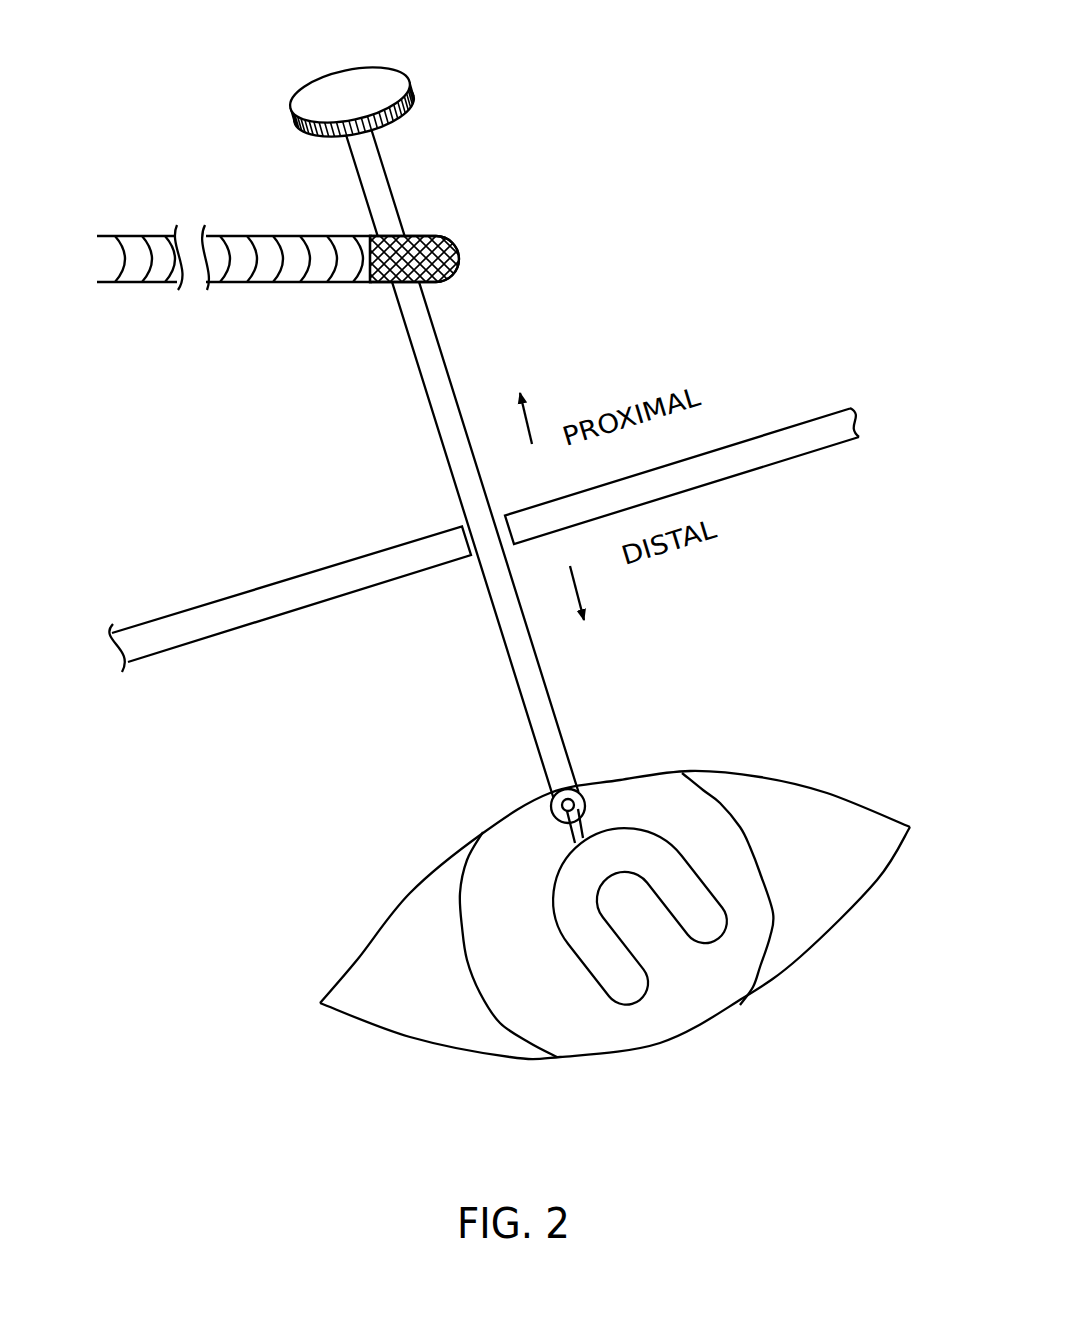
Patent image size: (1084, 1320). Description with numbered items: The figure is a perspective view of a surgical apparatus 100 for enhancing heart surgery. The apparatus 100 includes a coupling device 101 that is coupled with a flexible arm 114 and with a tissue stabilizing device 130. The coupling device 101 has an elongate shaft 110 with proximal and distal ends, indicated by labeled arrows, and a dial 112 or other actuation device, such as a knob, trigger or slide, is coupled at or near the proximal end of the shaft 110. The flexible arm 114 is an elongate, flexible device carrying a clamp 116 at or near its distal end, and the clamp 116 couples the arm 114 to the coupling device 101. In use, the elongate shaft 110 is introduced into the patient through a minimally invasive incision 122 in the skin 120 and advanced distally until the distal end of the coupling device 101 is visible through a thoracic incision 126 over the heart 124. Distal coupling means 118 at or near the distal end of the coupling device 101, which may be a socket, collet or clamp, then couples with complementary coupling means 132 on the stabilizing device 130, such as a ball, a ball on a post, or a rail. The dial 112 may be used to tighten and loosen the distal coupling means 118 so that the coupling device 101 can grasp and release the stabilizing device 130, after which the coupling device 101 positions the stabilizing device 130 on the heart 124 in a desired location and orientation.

The surgical apparatus 100 is at (660, 213).
The coupling device 101 is at (478, 352).
The elongate shaft 110 is at (434, 402).
The dial 112 is at (402, 68).
The flexible arm 114 is at (258, 232).
The clamp 116 is at (449, 233).
The distal coupling means 118 is at (588, 800).
The skin 120 is at (745, 437).
The minimally invasive incision 122 is at (463, 528).
The heart 124 is at (700, 848).
The thoracic incision 126 is at (810, 785).
The tissue stabilizing device 130 is at (643, 832).
The complementary coupling means 132 is at (558, 804).